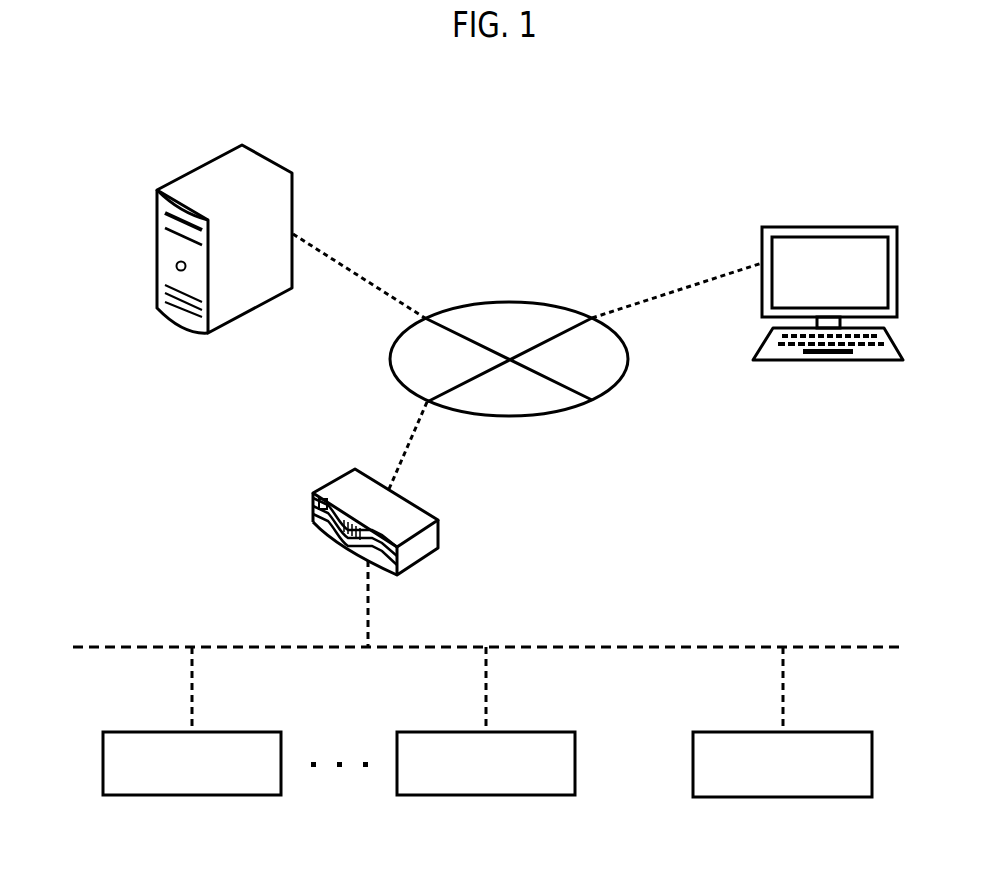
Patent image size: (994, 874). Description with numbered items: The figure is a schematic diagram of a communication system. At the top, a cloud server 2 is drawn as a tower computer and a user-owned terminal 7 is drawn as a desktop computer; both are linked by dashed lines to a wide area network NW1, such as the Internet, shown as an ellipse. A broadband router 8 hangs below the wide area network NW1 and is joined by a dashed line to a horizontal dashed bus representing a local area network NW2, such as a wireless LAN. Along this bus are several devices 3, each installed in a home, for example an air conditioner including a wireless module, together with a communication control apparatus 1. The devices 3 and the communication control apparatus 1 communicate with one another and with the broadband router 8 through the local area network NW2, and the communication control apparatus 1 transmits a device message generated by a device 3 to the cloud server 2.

The communication control apparatus 1 is at (693, 760).
The cloud server 2 is at (157, 237).
The device 3 is at (103, 765).
The user-owned terminal 7 is at (762, 241).
The broadband router 8 is at (316, 505).
The wide area network NW1 is at (527, 302).
The local area network NW2 is at (660, 647).